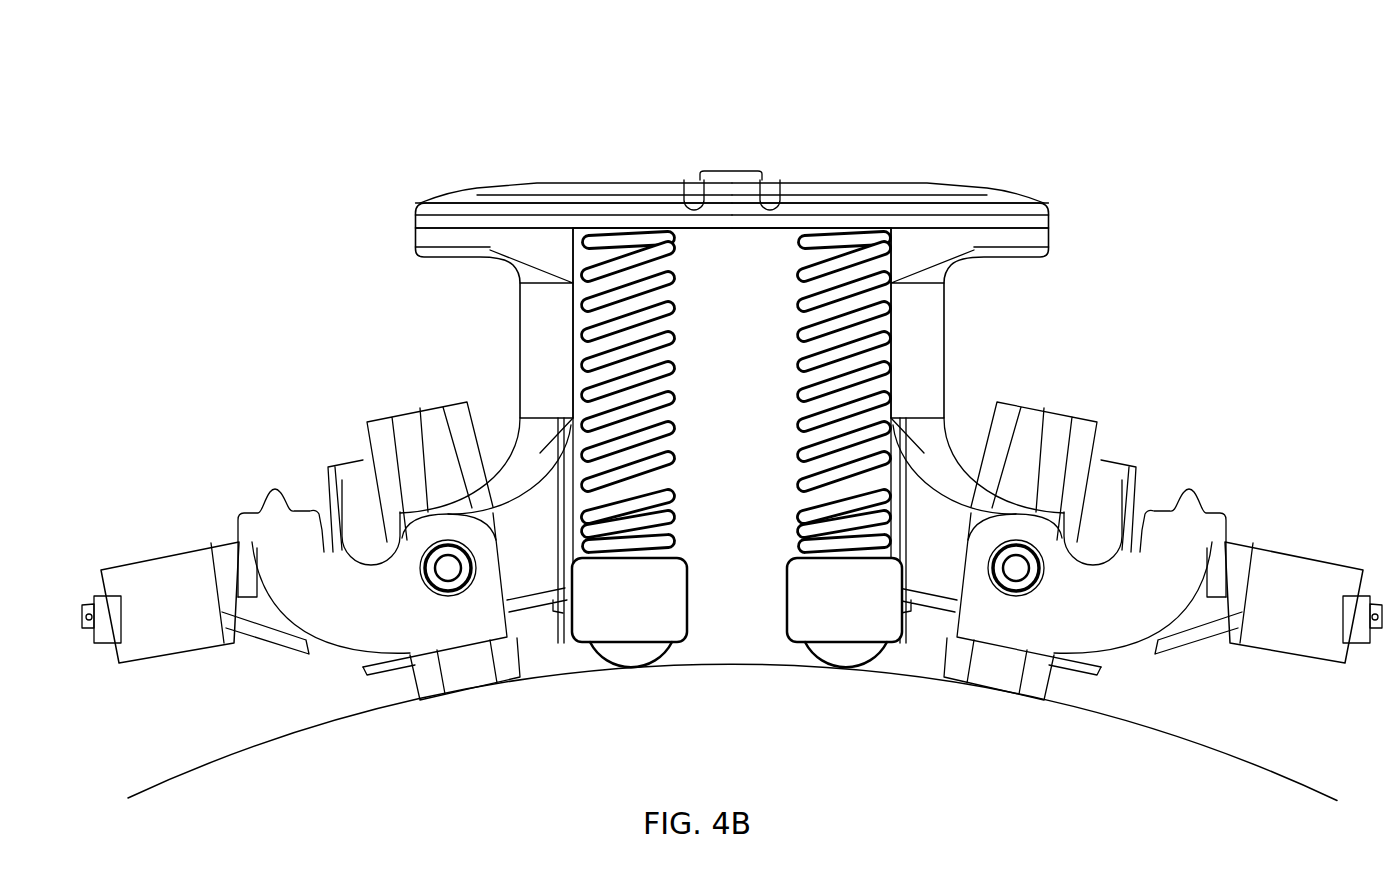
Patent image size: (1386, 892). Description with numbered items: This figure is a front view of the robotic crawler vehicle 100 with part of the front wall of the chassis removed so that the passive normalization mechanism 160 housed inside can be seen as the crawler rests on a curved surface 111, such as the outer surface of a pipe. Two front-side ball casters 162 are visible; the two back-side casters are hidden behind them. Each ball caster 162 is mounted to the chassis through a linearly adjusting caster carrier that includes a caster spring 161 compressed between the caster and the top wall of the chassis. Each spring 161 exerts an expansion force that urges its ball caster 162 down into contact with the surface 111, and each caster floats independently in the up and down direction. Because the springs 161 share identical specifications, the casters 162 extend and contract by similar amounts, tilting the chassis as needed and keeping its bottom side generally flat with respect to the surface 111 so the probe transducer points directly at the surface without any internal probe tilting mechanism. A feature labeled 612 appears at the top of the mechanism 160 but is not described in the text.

The robotic crawler vehicle 100 is at (366, 108).
The passive normalization mechanism 160 is at (617, 214).
The central boss 612 is at (668, 180).
The caster spring 161 is at (812, 338).
The ball caster 162 is at (633, 655).
The curved surface 111 is at (238, 747).